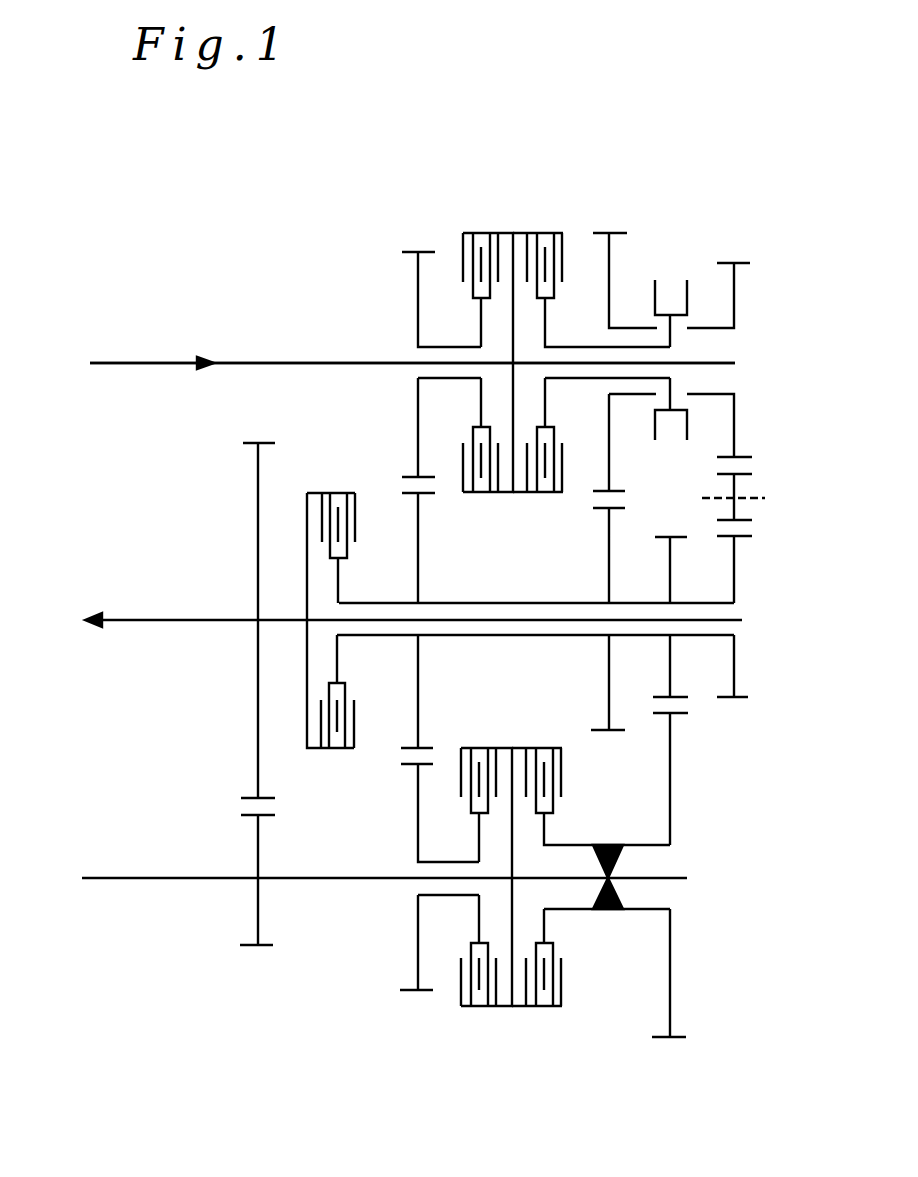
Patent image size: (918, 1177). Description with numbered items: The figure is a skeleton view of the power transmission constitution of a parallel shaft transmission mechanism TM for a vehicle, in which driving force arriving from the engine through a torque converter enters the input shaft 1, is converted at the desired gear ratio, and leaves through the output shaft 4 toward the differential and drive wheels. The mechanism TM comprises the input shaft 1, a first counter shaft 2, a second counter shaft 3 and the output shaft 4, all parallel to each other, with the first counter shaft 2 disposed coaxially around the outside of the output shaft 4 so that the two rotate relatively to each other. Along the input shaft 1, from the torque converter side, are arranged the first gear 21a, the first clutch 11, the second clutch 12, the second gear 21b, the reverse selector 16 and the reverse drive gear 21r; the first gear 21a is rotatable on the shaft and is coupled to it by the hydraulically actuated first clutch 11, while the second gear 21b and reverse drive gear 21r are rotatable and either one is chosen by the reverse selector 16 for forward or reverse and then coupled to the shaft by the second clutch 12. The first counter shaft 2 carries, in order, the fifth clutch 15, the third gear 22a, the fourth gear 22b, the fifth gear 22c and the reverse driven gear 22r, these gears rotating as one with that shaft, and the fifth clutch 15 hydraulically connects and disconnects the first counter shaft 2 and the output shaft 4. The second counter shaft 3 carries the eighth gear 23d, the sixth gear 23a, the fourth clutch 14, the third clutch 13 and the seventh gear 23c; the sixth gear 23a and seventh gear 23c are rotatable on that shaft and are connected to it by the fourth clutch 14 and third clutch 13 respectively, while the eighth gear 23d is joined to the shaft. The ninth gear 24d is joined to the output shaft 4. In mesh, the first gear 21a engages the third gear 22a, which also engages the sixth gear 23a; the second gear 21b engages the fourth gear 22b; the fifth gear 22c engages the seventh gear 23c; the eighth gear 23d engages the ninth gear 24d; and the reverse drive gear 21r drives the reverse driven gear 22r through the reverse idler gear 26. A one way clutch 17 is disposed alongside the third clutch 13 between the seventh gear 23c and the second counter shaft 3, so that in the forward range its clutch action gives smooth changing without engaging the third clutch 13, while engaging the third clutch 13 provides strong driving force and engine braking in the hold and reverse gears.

The transmission mechanism TM is at (668, 60).
The input shaft 1 is at (275, 362).
The first counter shaft 2 is at (558, 601).
The second counter shaft 3 is at (353, 876).
The output shaft 4 is at (162, 618).
The first clutch 11 is at (503, 232).
The second clutch 12 is at (533, 232).
The third clutch 13 is at (535, 1007).
The fourth clutch 14 is at (488, 1007).
The fifth clutch 15 is at (325, 752).
The reverse selector 16 is at (665, 310).
The one way clutch 17 is at (608, 912).
The first gear 21a is at (408, 250).
The second gear 21b is at (617, 232).
The reverse drive gear 21r is at (740, 262).
The third gear 22a is at (425, 495).
The fourth gear 22b is at (600, 733).
The fifth gear 22c is at (667, 536).
The reverse driven gear 22r is at (740, 700).
The sixth gear 23a is at (405, 993).
The seventh gear 23c is at (672, 1040).
The eighth gear 23d is at (265, 950).
The ninth gear 24d is at (262, 443).
The reverse idler gear 26 is at (748, 477).